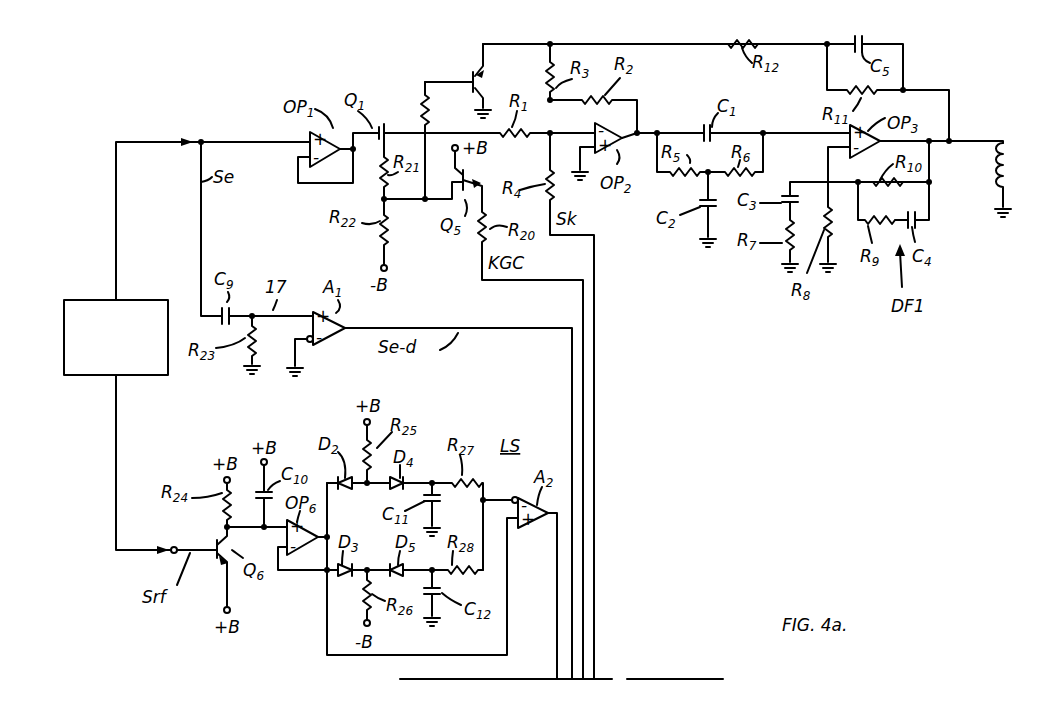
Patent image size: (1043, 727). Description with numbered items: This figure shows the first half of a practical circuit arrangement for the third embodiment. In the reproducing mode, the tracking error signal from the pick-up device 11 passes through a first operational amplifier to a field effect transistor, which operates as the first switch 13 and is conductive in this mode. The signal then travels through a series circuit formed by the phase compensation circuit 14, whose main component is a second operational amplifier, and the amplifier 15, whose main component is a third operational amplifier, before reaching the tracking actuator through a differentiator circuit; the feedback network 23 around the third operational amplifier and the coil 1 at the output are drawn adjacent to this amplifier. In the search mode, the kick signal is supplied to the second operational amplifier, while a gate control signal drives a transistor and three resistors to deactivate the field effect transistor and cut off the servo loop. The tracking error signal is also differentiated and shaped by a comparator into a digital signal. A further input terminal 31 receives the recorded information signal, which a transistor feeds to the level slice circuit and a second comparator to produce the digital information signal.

The pick-up device 11 is at (149, 300).
The first switch 13 is at (388, 128).
The phase compensation circuit 14 is at (657, 172).
The amplifier 15 is at (935, 221).
The feedback resistor-capacitor network 23 is at (811, 81).
The input terminal 31 is at (173, 547).
The coil 1 is at (1013, 166).